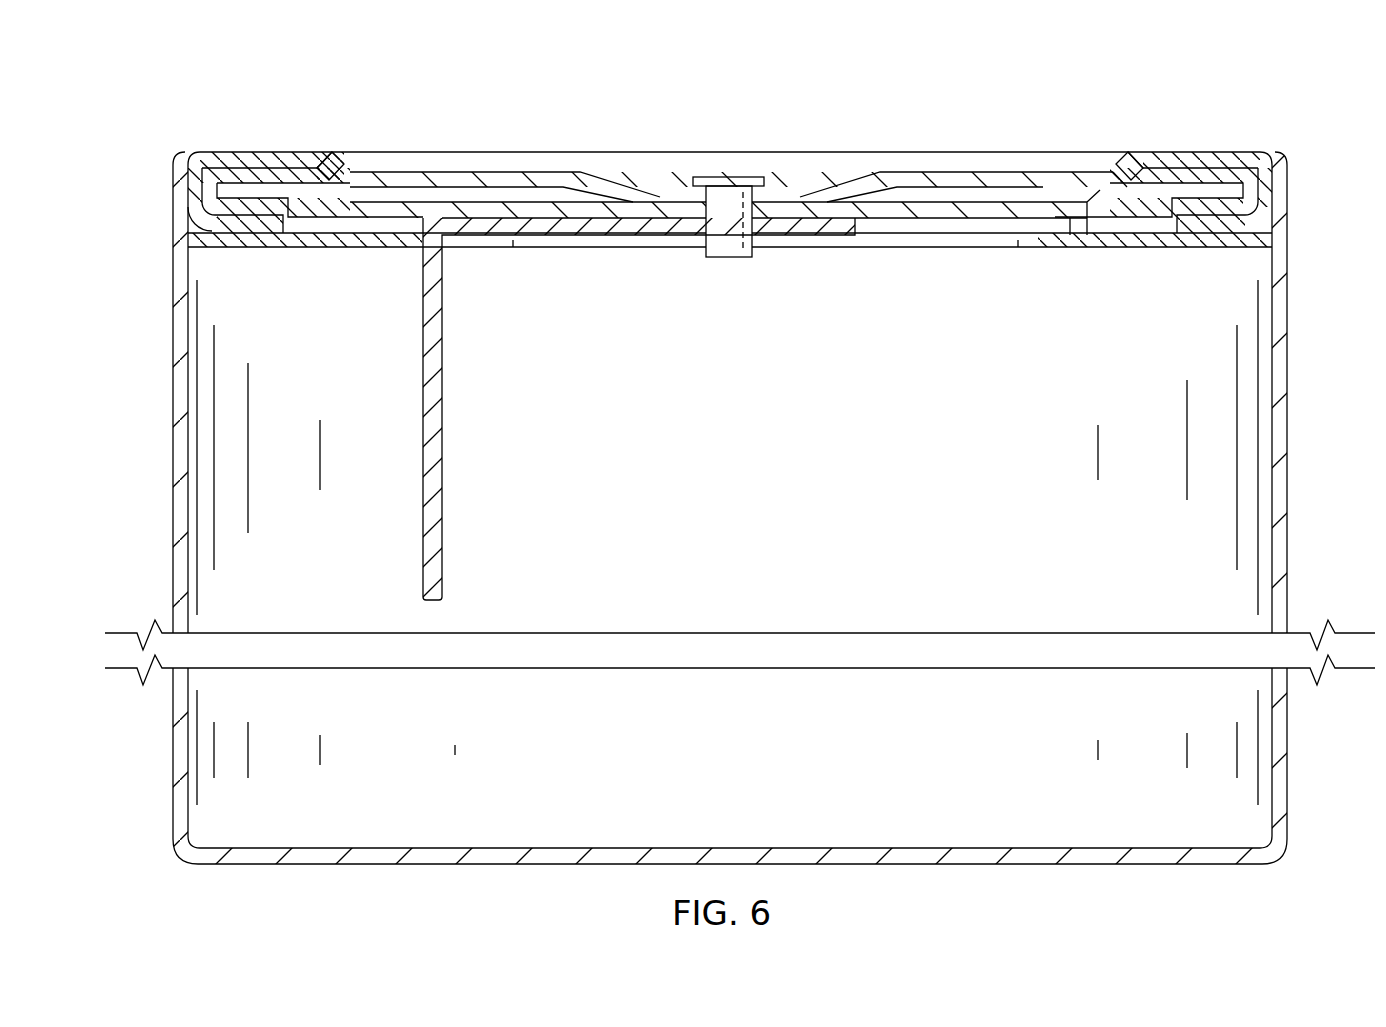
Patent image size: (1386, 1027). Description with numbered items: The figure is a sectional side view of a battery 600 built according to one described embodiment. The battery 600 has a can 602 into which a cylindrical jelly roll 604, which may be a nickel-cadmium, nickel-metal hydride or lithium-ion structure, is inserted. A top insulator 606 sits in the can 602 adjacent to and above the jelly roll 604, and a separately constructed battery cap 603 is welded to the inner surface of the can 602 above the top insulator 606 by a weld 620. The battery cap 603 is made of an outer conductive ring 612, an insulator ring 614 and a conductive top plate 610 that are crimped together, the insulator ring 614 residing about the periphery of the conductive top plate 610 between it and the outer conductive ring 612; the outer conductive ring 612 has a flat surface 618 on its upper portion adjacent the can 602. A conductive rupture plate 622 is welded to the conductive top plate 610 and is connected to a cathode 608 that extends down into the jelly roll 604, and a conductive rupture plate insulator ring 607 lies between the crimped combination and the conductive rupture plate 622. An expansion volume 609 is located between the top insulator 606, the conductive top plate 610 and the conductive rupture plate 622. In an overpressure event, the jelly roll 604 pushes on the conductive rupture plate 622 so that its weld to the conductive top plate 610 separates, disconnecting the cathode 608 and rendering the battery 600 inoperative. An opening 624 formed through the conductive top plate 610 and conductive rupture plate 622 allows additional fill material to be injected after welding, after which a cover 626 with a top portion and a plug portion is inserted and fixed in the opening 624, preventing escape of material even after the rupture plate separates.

The battery 600 is at (1282, 899).
The can 602 is at (1290, 795).
The battery cap 603 is at (601, 86).
The jelly roll 604 is at (758, 759).
The top insulator 606 is at (876, 249).
The conductive rupture plate insulator ring 607 is at (1083, 236).
The cathode 608 is at (420, 460).
The expansion volume 609 is at (308, 234).
The conductive top plate 610 is at (960, 170).
The outer conductive ring 612 is at (232, 150).
The insulator ring 614 is at (335, 150).
The flat surface 618 is at (1198, 150).
The weld 620 is at (190, 150).
The conductive rupture plate 622 is at (978, 220).
The opening 624 is at (722, 252).
The cover 626 is at (714, 176).